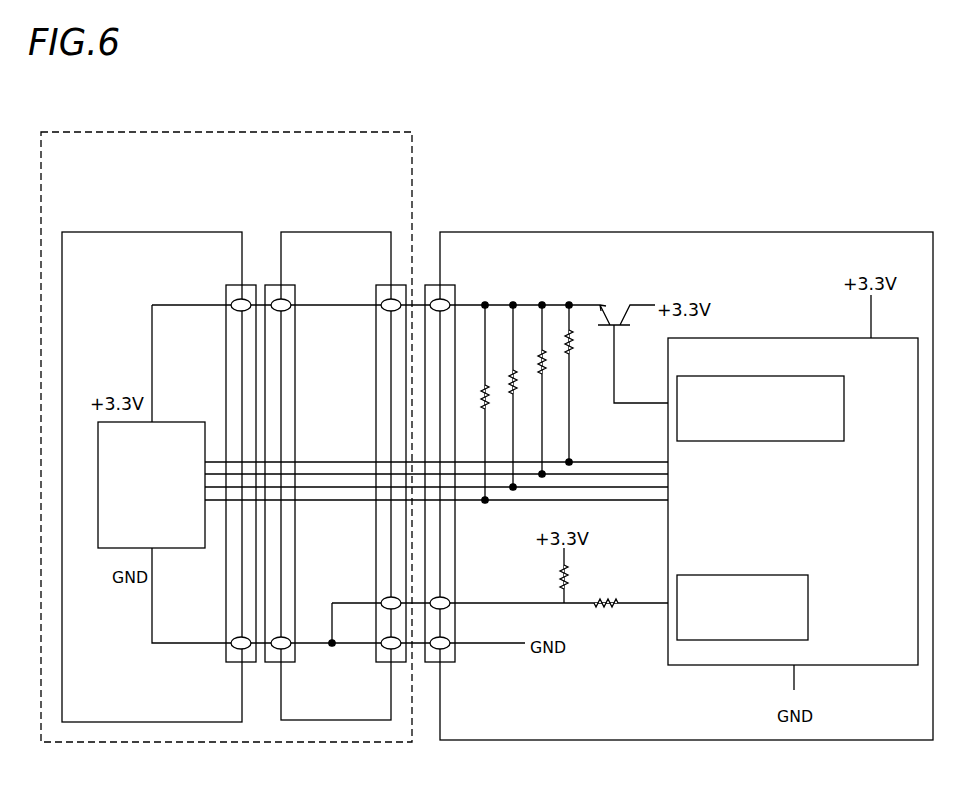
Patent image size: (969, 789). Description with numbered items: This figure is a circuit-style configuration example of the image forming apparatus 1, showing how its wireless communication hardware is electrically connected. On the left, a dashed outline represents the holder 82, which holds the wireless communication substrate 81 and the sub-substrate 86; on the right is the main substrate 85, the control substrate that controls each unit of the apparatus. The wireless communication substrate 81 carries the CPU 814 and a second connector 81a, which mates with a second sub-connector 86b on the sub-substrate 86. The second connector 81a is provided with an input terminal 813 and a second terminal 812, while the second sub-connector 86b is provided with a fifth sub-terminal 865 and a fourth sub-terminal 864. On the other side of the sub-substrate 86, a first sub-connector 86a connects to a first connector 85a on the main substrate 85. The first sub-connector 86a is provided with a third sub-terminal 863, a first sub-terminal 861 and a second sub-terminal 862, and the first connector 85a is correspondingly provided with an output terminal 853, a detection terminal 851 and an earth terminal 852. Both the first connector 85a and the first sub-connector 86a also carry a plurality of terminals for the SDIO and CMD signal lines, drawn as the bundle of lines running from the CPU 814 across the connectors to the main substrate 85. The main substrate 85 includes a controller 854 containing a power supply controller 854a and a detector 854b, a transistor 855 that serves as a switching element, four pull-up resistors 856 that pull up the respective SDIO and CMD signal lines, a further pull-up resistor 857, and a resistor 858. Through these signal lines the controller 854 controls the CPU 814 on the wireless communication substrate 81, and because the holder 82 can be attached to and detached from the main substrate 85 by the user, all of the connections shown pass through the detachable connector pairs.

The image forming apparatus 1 is at (836, 140).
The holder 82 is at (61, 131).
The wireless communication substrate 81 is at (134, 232).
The sub-substrate 86 is at (322, 232).
The main substrate 85 is at (676, 232).
The second connector 81a is at (243, 284).
The second sub-connector 86b is at (272, 284).
The first sub-connector 86a is at (400, 284).
The first connector 85a is at (429, 284).
The input terminal 813 is at (235, 299).
The second terminal 812 is at (236, 650).
The fifth sub-terminal 865 is at (288, 310).
The fourth sub-terminal 864 is at (286, 650).
The third sub-terminal 863 is at (386, 310).
The second sub-terminal 862 is at (386, 650).
The first sub-terminal 861 is at (386, 598).
The output terminal 853 is at (445, 299).
The earth terminal 852 is at (446, 650).
The detection terminal 851 is at (446, 598).
The CPU 814 is at (167, 422).
The controller 854 is at (764, 338).
The power supply controller 854a is at (845, 413).
The detector 854b is at (810, 612).
The transistor 855 is at (618, 330).
The pull-up resistors 856 is at (486, 410).
The pull-up resistor 857 is at (568, 575).
The resistor 858 is at (615, 608).